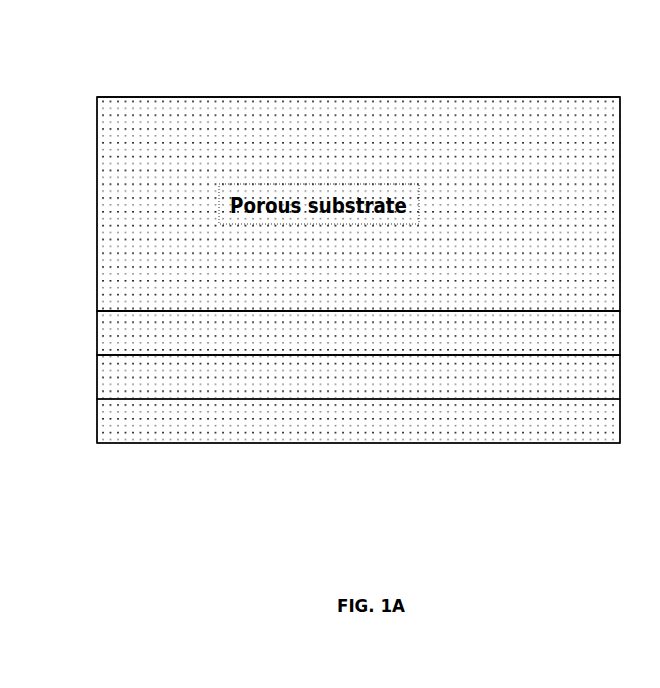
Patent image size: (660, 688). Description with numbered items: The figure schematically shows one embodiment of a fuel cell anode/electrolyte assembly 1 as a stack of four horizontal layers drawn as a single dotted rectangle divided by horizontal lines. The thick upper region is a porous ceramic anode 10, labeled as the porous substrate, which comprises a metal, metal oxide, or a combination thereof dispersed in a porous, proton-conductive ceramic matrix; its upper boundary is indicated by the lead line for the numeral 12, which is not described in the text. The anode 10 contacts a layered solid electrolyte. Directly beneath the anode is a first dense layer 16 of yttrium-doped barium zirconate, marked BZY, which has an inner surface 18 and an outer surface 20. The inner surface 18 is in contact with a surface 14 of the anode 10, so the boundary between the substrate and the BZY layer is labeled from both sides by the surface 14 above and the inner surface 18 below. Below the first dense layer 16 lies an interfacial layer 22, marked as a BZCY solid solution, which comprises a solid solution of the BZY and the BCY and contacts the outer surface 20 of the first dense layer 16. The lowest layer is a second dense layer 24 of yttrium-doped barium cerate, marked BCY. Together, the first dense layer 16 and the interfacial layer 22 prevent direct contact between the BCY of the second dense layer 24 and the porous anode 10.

The fuel cell anode/electrolyte assembly 1 is at (336, 56).
The porous ceramic anode 10 is at (487, 170).
The top surface of porous substrate 12 is at (434, 88).
The surface of anode 14 is at (568, 303).
The first dense layer 16 is at (537, 343).
The inner surface 18 is at (576, 320).
The outer surface 20 is at (518, 364).
The interfacial layer 22 is at (466, 387).
The second dense layer 24 is at (325, 432).